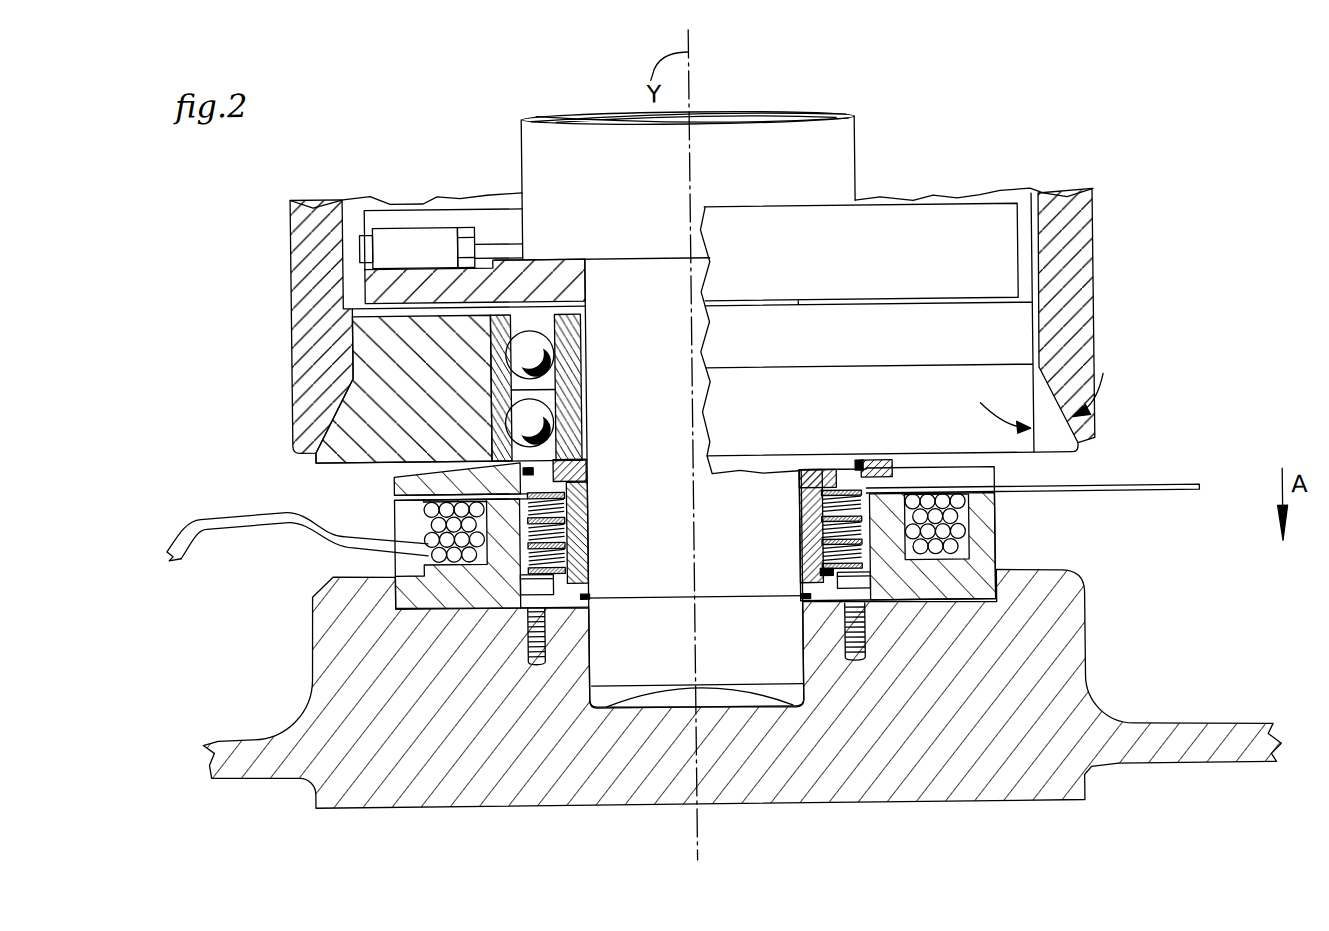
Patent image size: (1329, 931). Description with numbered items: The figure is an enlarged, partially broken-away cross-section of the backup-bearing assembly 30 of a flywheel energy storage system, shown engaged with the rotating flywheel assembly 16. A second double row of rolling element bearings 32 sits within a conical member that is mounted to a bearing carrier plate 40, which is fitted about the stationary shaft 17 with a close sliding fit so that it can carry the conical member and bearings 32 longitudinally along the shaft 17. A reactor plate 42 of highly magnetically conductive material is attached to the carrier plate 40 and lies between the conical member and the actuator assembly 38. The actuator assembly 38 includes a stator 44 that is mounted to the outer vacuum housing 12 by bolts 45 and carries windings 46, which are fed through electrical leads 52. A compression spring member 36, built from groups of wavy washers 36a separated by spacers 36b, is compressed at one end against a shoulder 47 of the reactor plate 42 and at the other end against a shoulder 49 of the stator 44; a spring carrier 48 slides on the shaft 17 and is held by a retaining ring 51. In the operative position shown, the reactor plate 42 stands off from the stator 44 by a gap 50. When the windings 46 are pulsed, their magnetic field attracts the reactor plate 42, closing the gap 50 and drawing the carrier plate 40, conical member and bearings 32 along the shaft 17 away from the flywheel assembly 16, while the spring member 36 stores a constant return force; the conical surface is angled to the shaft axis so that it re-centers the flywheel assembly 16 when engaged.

The outer vacuum housing 12 is at (1074, 719).
The rotating flywheel assembly 16 is at (1069, 291).
The stationary shaft 17 is at (676, 470).
The backup-bearing assembly 30 is at (242, 466).
The second double row of rolling element bearings 32 is at (537, 329).
The compression spring member 36 is at (606, 573).
The wavy washers 36a is at (564, 547).
The spacers 36b is at (822, 570).
The actuator assembly 38 is at (1135, 551).
The bearing carrier plate 40 is at (577, 377).
The reactor plate 42 is at (972, 473).
The stator 44 is at (402, 587).
The bolts 45 is at (846, 598).
The windings 46 is at (439, 544).
The shoulder of reactor plate 47 is at (846, 480).
The spring carrier 48 is at (790, 484).
The shoulder of stator 49 is at (867, 558).
The gap 50 is at (1188, 553).
The retaining ring 51 is at (588, 597).
The electrical leads 52 is at (227, 521).